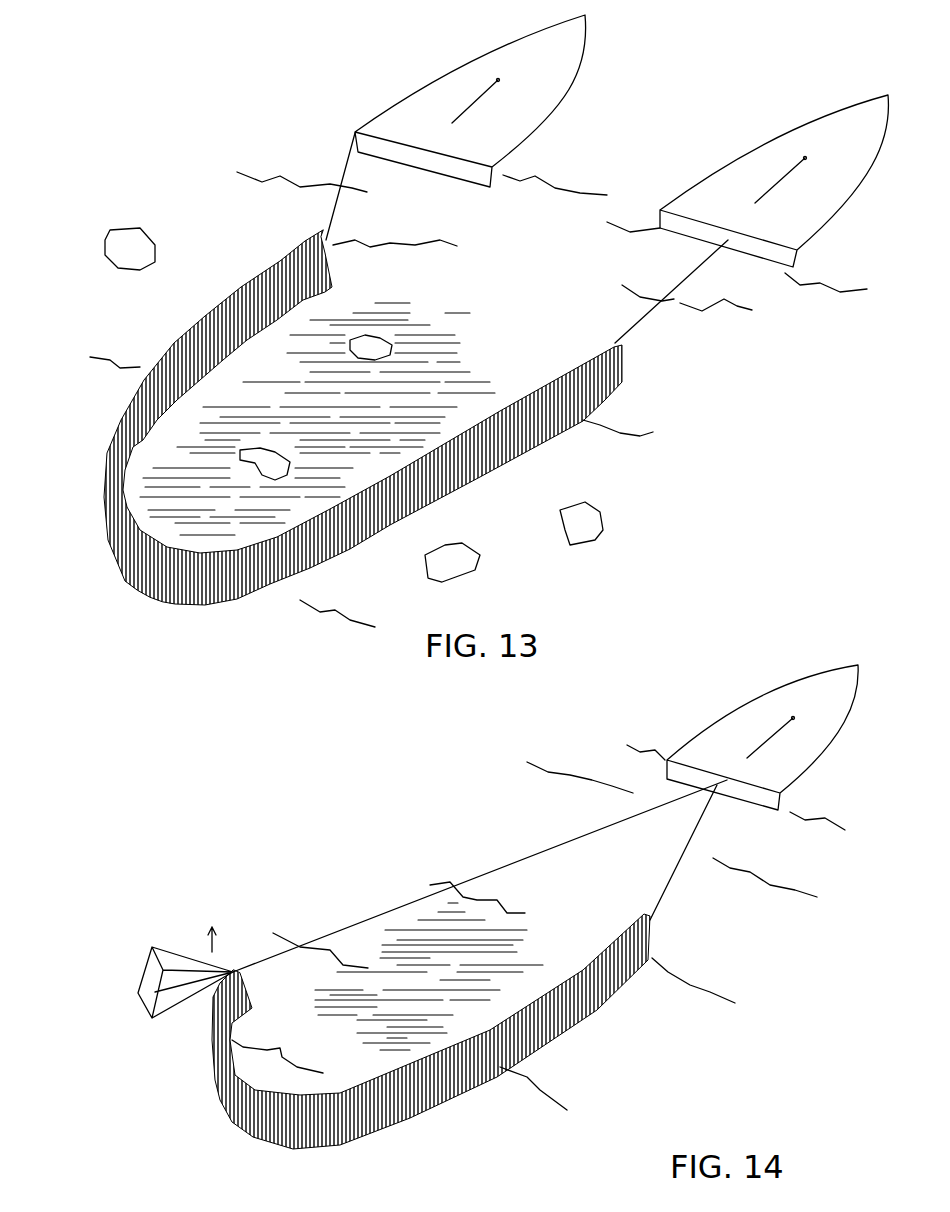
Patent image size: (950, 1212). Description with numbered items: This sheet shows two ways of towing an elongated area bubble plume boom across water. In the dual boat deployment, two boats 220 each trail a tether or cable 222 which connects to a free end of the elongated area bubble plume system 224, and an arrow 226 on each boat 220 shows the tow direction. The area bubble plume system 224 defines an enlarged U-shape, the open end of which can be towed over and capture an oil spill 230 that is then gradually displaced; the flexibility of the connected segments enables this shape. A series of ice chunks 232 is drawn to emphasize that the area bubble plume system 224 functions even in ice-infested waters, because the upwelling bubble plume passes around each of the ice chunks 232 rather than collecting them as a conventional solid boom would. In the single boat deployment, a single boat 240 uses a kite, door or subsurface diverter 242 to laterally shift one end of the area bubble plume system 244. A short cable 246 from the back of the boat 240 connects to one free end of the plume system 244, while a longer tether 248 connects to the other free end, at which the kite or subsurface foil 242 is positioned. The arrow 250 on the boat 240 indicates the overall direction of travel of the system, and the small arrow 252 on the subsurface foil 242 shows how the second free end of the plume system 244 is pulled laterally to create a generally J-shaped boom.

In FIG. 13, the boat 220 is at (407, 98).
In FIG. 13, the tether or cable 222 is at (413, 155).
In FIG. 13, the area bubble plume system 224 is at (542, 450).
In FIG. 13, the arrow 226 is at (773, 180).
In FIG. 13, the oil spill 230 is at (300, 393).
In FIG. 13, the ice chunk 232 is at (350, 337).
In FIG. 14, the boat 240 is at (757, 697).
In FIG. 14, the subsurface diverter 242 is at (145, 962).
In FIG. 14, the area bubble plume system 244 is at (583, 1025).
In FIG. 14, the short cable 246 is at (665, 898).
In FIG. 14, the longer tether 248 is at (525, 865).
In FIG. 14, the arrow 250 is at (773, 740).
In FIG. 14, the small arrow 252 is at (217, 938).